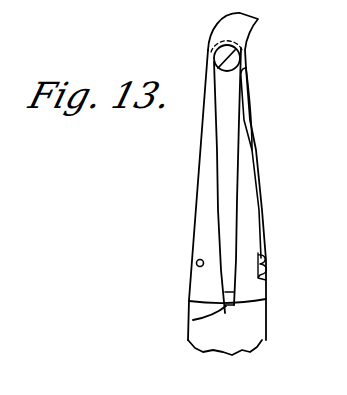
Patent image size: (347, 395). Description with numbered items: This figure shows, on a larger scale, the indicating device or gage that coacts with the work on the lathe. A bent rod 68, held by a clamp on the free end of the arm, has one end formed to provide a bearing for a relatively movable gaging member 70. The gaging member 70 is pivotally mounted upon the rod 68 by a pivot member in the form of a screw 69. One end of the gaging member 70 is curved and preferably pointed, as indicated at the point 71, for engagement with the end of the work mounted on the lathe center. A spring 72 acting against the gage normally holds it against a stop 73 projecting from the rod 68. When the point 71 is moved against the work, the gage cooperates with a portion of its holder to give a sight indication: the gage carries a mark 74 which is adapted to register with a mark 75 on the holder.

The bent rod 68 is at (262, 332).
The screw 69 is at (239, 63).
The gaging member 70 is at (224, 182).
The point 71 is at (261, 19).
The spring 72 is at (256, 139).
The stop 73 is at (196, 263).
The mark 74 is at (225, 299).
The mark 75 is at (193, 320).